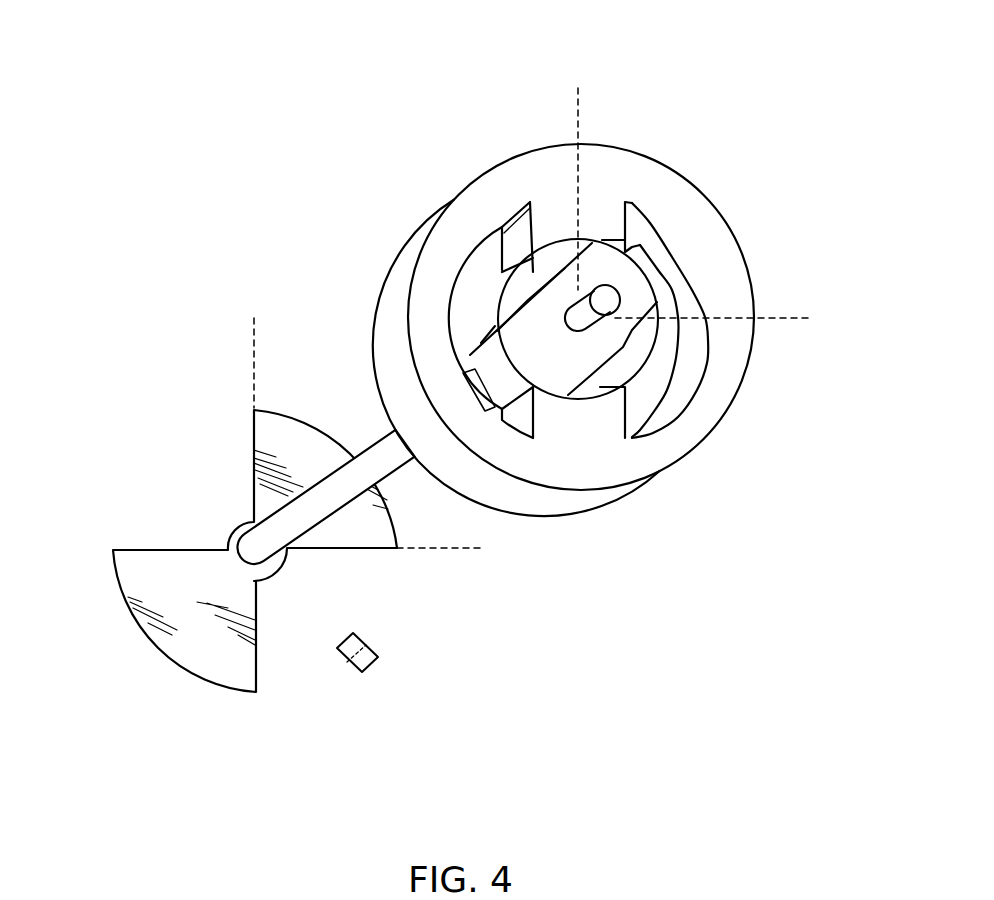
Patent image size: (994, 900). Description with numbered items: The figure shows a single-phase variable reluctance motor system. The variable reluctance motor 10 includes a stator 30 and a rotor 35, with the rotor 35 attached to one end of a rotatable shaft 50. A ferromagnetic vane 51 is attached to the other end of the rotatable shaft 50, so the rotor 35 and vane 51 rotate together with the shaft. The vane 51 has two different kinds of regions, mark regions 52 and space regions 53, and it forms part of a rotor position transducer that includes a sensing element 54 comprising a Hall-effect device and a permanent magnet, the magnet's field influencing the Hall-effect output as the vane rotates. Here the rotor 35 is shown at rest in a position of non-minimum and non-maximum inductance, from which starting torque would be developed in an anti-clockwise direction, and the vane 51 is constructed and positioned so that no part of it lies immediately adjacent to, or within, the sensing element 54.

The variable reluctance motor 10 is at (744, 81).
The stator 30 is at (628, 173).
The rotor 35 is at (613, 345).
The rotatable shaft 50 is at (385, 453).
The ferromagnetic vane 51 is at (181, 325).
The mark regions 52 is at (281, 428).
The space regions 53 is at (188, 472).
The sensing element 54 is at (378, 657).